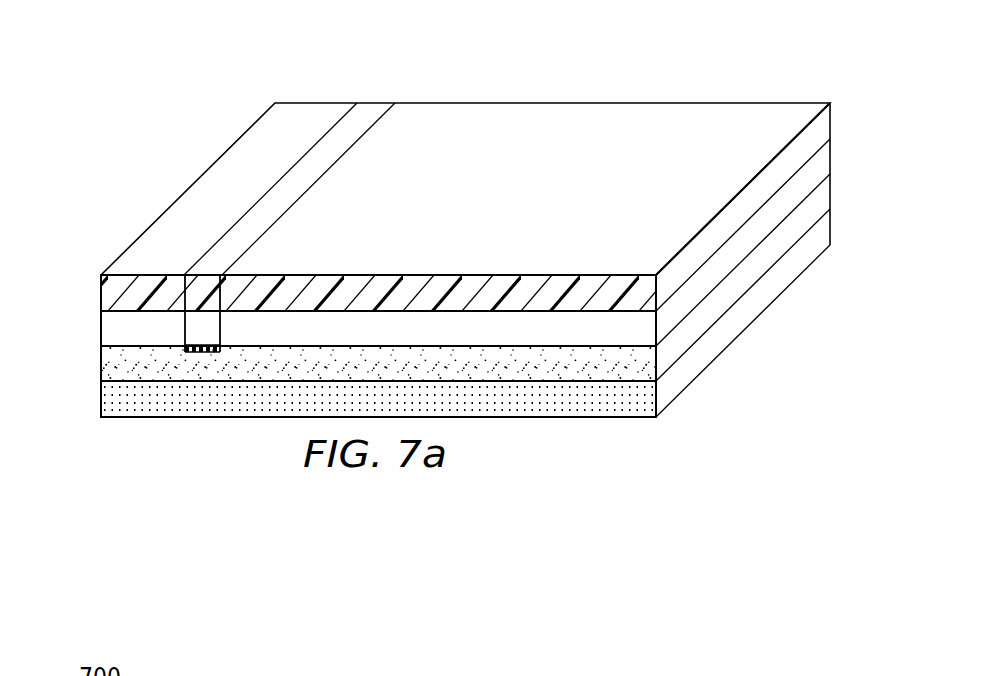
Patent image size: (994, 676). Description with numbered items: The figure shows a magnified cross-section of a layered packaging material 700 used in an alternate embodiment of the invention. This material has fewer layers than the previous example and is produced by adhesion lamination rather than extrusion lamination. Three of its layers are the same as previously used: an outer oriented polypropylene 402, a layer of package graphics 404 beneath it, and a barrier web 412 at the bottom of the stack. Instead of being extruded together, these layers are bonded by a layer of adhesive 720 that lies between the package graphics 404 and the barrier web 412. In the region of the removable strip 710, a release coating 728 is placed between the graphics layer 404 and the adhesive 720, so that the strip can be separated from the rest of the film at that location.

The layered packaging material 700 is at (677, 71).
The removable strip 710 is at (370, 111).
The oriented polypropylene 402 is at (113, 293).
The package graphics 404 is at (113, 323).
The release coating 728 is at (193, 348).
The adhesive 720 is at (113, 365).
The barrier web 412 is at (113, 397).